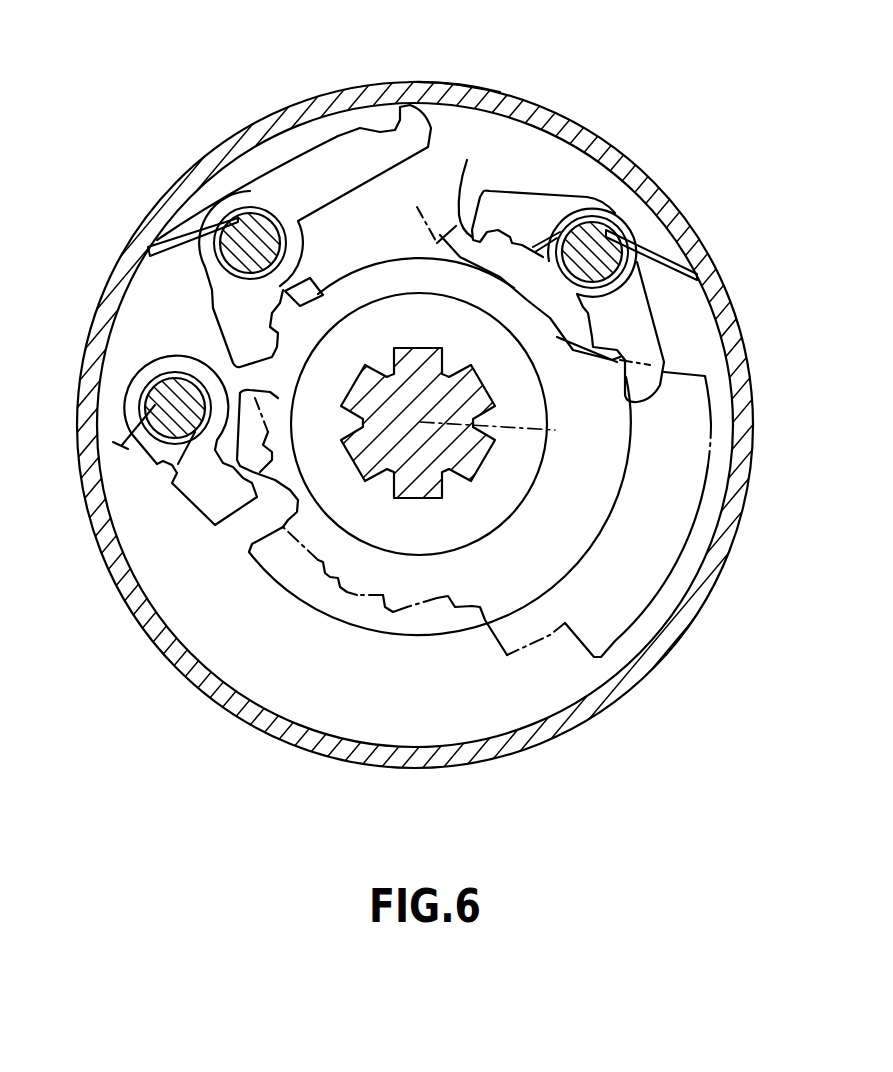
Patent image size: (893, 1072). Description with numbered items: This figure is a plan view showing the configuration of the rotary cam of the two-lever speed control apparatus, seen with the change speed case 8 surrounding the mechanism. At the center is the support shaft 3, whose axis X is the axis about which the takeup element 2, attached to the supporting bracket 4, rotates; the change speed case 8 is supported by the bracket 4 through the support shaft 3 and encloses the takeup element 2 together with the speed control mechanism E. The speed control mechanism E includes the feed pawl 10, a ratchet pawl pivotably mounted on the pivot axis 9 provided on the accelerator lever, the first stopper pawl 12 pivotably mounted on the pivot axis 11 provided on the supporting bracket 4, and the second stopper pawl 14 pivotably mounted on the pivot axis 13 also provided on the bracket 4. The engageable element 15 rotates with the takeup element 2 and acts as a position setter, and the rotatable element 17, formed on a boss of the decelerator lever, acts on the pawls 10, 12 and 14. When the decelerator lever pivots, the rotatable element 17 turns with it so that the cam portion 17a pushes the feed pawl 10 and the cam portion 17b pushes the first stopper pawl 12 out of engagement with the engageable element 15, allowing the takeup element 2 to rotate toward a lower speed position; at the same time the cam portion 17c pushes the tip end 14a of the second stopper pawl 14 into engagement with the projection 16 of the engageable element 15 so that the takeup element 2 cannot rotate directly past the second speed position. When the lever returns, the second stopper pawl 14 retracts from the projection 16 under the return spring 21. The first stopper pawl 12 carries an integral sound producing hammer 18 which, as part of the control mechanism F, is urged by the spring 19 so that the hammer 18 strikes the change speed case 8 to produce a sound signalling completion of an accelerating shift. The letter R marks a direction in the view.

The takeup element 2 is at (670, 580).
The support shaft 3 is at (447, 463).
The supporting bracket 4 is at (592, 683).
The change speed case 8 is at (453, 93).
The pivot axis 9 is at (160, 405).
The feed pawl 10 is at (213, 507).
The pivot axis 11 is at (240, 223).
The first stopper pawl 12 is at (252, 350).
The pivot axis 13 is at (613, 233).
The second stopper pawl 14 is at (585, 203).
The tip end 14a is at (469, 181).
The engageable element 15 is at (356, 600).
The projection 16 is at (422, 204).
The rotatable element 17 is at (440, 651).
The cam portion 17a is at (223, 358).
The cam portion 17b is at (305, 283).
The cam portion 17c is at (662, 370).
The sound producing hammer 18 is at (340, 147).
The spring 19 is at (165, 237).
The return spring 21 is at (696, 274).
The speed control mechanism E is at (152, 494).
The control mechanism F is at (542, 144).
The direction R is at (178, 284).
The axis X is at (501, 433).